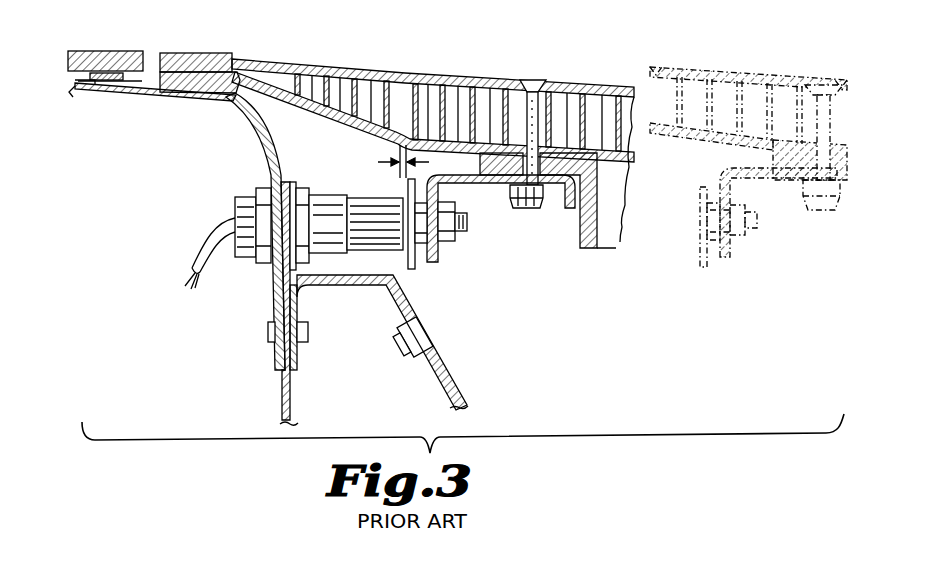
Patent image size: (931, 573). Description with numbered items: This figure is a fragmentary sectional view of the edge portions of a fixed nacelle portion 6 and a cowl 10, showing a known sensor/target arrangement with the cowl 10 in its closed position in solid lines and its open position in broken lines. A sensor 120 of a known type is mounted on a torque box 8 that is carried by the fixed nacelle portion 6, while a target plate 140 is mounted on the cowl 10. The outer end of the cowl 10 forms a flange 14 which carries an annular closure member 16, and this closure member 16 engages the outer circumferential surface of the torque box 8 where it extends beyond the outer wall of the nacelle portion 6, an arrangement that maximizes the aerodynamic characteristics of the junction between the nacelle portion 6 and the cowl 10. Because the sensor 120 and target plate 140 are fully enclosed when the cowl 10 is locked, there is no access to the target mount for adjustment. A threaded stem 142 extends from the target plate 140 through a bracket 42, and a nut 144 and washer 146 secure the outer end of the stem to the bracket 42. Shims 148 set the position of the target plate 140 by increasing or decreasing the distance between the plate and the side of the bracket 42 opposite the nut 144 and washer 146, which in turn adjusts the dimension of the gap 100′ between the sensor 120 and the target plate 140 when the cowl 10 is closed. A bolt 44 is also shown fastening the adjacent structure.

The fixed nacelle portion 6 is at (102, 56).
The torque box 8 is at (250, 122).
The cowl 10 is at (458, 80).
The flange 14 is at (194, 62).
The annular closure member 16 is at (218, 73).
The bracket 42 is at (466, 172).
The bolt 44 is at (538, 84).
The gap 100′ is at (402, 146).
The sensor 120 is at (321, 195).
The target plate 140 is at (432, 268).
The threaded stem 142 is at (465, 226).
The nut 144 is at (443, 229).
The washer 146 is at (445, 252).
The shims 148 is at (412, 272).